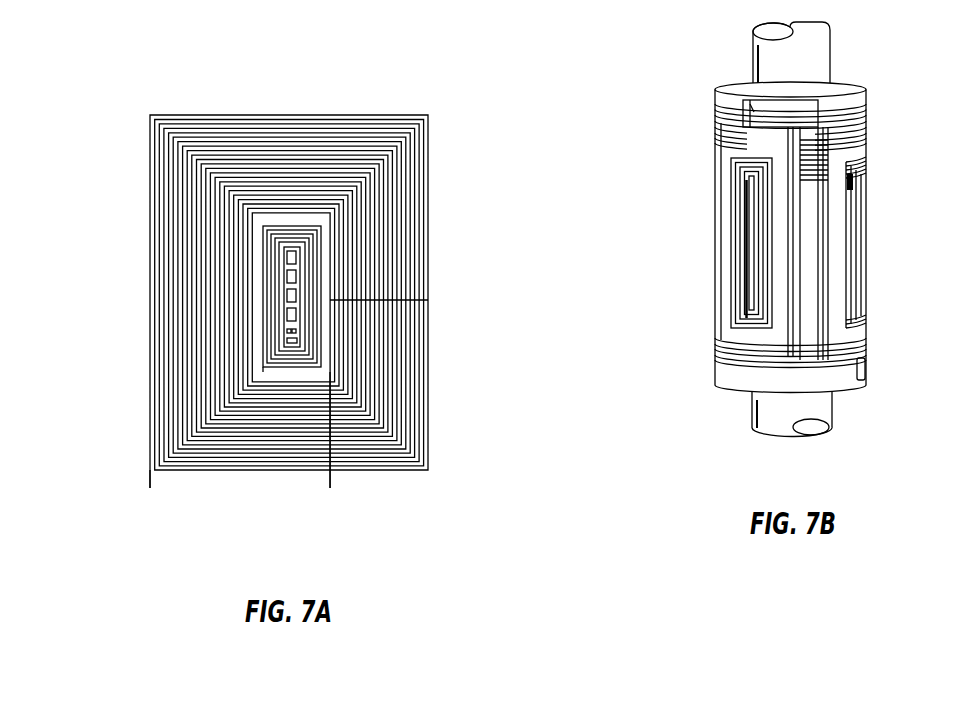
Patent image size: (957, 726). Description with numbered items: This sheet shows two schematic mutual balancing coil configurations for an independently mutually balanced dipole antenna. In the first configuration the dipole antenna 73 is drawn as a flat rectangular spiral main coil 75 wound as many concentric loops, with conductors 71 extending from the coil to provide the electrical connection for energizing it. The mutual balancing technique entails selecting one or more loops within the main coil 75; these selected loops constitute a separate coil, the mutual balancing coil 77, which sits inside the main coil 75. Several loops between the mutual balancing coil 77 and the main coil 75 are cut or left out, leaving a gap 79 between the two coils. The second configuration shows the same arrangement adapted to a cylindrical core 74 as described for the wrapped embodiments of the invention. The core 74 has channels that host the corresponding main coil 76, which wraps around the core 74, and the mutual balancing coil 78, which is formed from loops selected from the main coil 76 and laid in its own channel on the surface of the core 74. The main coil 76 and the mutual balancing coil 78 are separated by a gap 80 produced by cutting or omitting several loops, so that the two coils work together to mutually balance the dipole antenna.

In FIG. 7A, the conductors 71 is at (150, 473).
In FIG. 7A, the mutually balanced dipole antenna 73 is at (466, 148).
In FIG. 7A, the main coil 75 is at (348, 115).
In FIG. 7A, the mutual balancing coil 77 is at (263, 372).
In FIG. 7A, the gap 79 is at (262, 223).
In FIG. 7B, the core 74 is at (727, 370).
In FIG. 7B, the main coil 76 is at (867, 121).
In FIG. 7B, the mutual balancing coil 78 is at (750, 200).
In FIG. 7B, the gap 80 is at (867, 156).